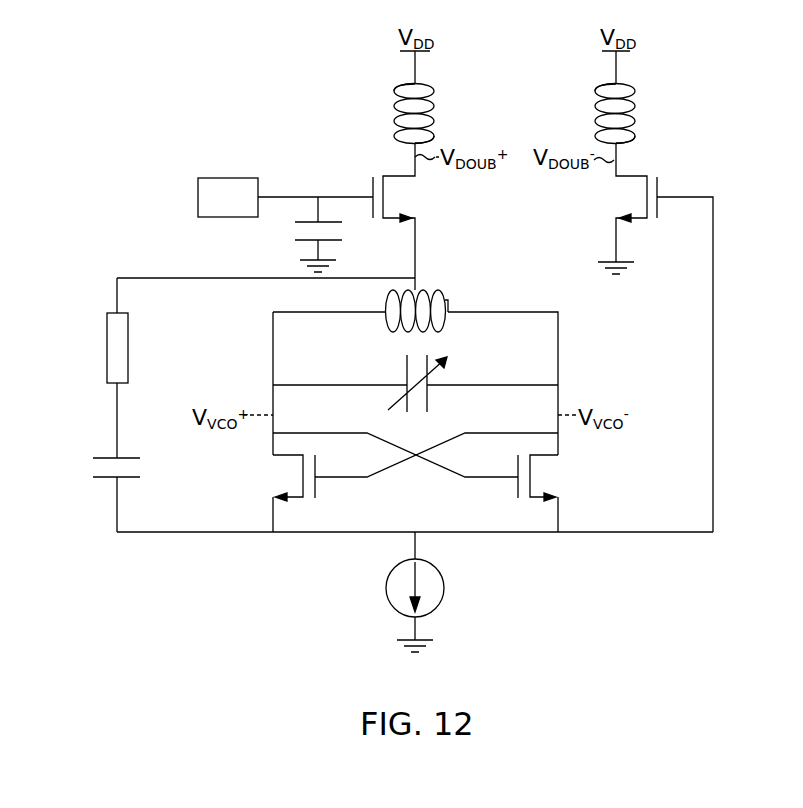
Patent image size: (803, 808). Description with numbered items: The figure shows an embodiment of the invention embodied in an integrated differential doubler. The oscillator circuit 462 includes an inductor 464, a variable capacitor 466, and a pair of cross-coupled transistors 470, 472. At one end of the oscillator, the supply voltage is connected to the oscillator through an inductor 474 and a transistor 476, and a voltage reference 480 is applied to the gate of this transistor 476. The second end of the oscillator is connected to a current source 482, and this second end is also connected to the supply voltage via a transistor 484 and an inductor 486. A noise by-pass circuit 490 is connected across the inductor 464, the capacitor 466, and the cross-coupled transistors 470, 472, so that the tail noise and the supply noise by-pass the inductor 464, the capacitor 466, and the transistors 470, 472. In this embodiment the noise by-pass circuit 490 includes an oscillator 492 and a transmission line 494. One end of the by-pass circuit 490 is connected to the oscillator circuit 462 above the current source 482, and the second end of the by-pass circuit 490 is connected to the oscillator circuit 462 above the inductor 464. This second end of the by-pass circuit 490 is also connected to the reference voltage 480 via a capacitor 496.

The circuit 462 is at (207, 105).
The inductor 464 is at (447, 300).
The variable capacitor 466 is at (407, 364).
The cross-coupled transistor 470 is at (318, 490).
The cross-coupled transistor 472 is at (515, 490).
The inductor 474 is at (393, 97).
The transistor 476 is at (373, 190).
The voltage reference 480 is at (228, 178).
The current source 482 is at (444, 590).
The transistor 484 is at (657, 188).
The inductor 486 is at (635, 97).
The noise by-pass circuit 490 is at (85, 363).
The oscillator 492 is at (105, 480).
The transmission line 494 is at (106, 354).
The capacitor 496 is at (295, 232).